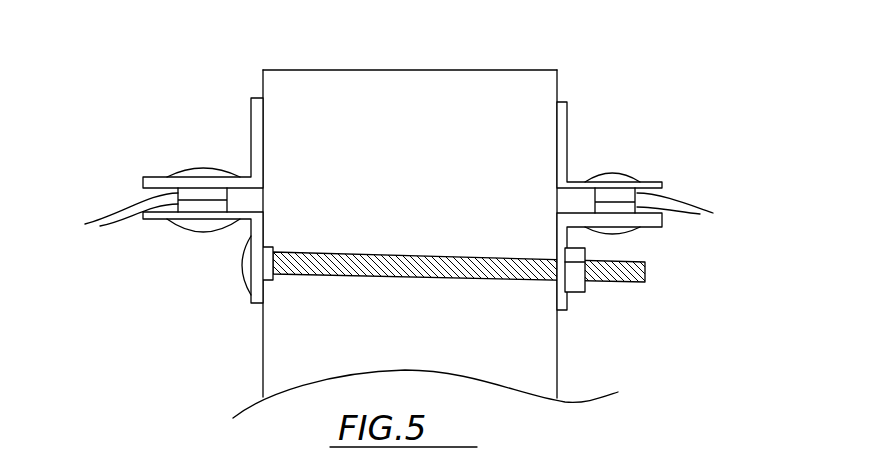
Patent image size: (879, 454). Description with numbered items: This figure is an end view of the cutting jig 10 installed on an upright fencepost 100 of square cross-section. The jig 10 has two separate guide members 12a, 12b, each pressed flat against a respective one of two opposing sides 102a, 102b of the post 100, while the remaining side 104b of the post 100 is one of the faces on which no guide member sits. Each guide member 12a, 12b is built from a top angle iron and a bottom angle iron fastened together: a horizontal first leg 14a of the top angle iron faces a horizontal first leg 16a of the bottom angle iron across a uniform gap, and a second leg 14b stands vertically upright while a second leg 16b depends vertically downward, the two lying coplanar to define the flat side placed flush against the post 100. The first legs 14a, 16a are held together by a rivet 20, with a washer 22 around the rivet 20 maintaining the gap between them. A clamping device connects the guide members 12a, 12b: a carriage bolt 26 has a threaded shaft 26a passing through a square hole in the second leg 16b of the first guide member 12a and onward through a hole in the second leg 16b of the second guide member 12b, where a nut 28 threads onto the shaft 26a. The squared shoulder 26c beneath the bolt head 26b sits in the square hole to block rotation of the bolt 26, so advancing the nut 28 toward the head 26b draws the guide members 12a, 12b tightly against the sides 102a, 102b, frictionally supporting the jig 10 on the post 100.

The cutting jig 10 is at (399, 215).
The first guide member 12a is at (178, 197).
The second guide member 12b is at (465, 198).
The first leg of top angle iron 14a is at (167, 180).
The second leg of top angle iron 14b is at (251, 112).
The first leg of bottom angle iron 16a is at (165, 226).
The second leg of bottom angle iron 16b is at (253, 302).
The rivet 20 is at (203, 172).
The washer 22 is at (85, 224).
The carriage bolt 26 is at (453, 230).
The threaded shaft 26a is at (455, 260).
The bolt head 26b is at (238, 258).
The squared shoulder 26c is at (270, 247).
The nut 28 is at (573, 278).
The fencepost 100 is at (414, 215).
The first side of post 102a is at (263, 355).
The second side of post 102b is at (558, 363).
The side of post 104b is at (408, 93).